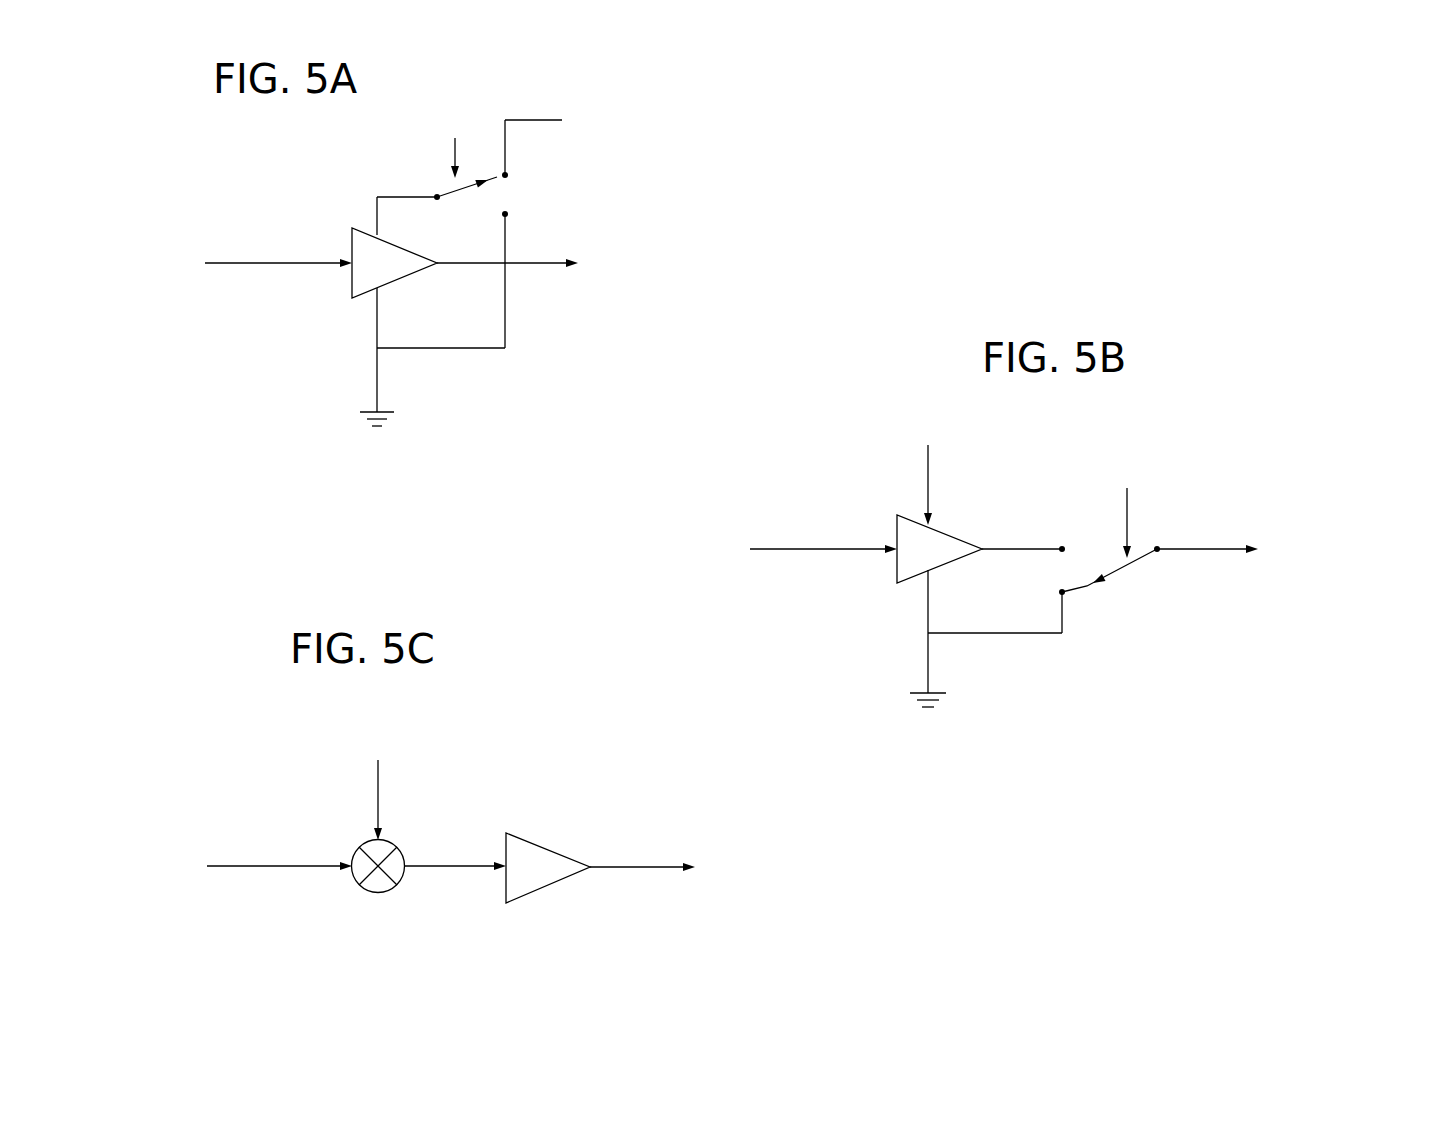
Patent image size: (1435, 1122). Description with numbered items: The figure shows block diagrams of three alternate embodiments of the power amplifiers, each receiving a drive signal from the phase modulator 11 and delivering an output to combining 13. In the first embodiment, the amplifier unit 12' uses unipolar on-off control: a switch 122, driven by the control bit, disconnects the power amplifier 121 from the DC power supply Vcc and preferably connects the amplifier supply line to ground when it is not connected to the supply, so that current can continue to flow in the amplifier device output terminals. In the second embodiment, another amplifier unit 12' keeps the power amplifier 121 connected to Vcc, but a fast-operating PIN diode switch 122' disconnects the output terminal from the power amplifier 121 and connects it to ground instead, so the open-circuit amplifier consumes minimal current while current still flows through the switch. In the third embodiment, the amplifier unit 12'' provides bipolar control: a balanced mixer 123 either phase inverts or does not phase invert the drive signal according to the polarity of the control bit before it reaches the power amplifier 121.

In FIG. 5A, the phase modulator input 11 is at (266, 245).
In FIG. 5B, the phase modulator input 11 is at (812, 532).
In FIG. 5C, the phase modulator input 11 is at (266, 847).
In FIG. 5A, the power amplifier 121 is at (392, 283).
In FIG. 5B, the power amplifier 121 is at (938, 568).
In FIG. 5C, the power amplifier 121 is at (547, 885).
In FIG. 5A, the switch 122 is at (512, 202).
In FIG. 5B, the PIN diode switch 122' is at (1137, 592).
In FIG. 5C, the balanced mixer 123 is at (427, 847).
In FIG. 5A, the combining circuit output 13 is at (571, 265).
In FIG. 5B, the combining circuit output 13 is at (1282, 554).
In FIG. 5C, the combining circuit output 13 is at (708, 871).
In FIG. 5A, the amplifier unit 12' is at (496, 267).
In FIG. 5B, the amplifier unit 12' is at (988, 561).
In FIG. 5C, the amplifier unit 12'' is at (492, 800).